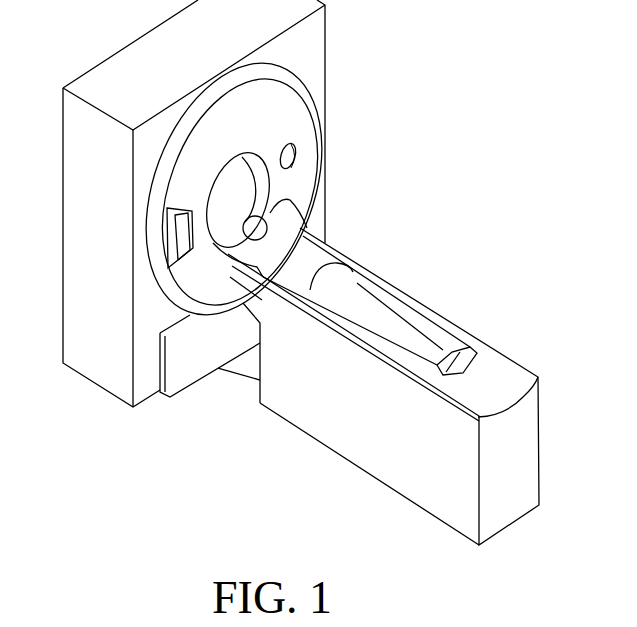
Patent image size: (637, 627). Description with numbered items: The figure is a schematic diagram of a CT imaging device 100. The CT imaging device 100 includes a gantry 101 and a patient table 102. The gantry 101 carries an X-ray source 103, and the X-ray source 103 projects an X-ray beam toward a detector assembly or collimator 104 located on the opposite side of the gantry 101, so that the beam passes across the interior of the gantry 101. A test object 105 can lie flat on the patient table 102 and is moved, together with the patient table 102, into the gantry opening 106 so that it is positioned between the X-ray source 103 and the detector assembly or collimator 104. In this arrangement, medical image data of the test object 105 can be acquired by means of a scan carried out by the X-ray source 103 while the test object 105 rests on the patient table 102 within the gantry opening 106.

The CT imaging device 100 is at (421, 38).
The gantry 101 is at (172, 48).
The patient table 102 is at (340, 387).
The X-ray source 103 is at (298, 150).
The detector assembly or collimator 104 is at (167, 232).
The test object 105 is at (306, 252).
The gantry opening 106 is at (233, 182).